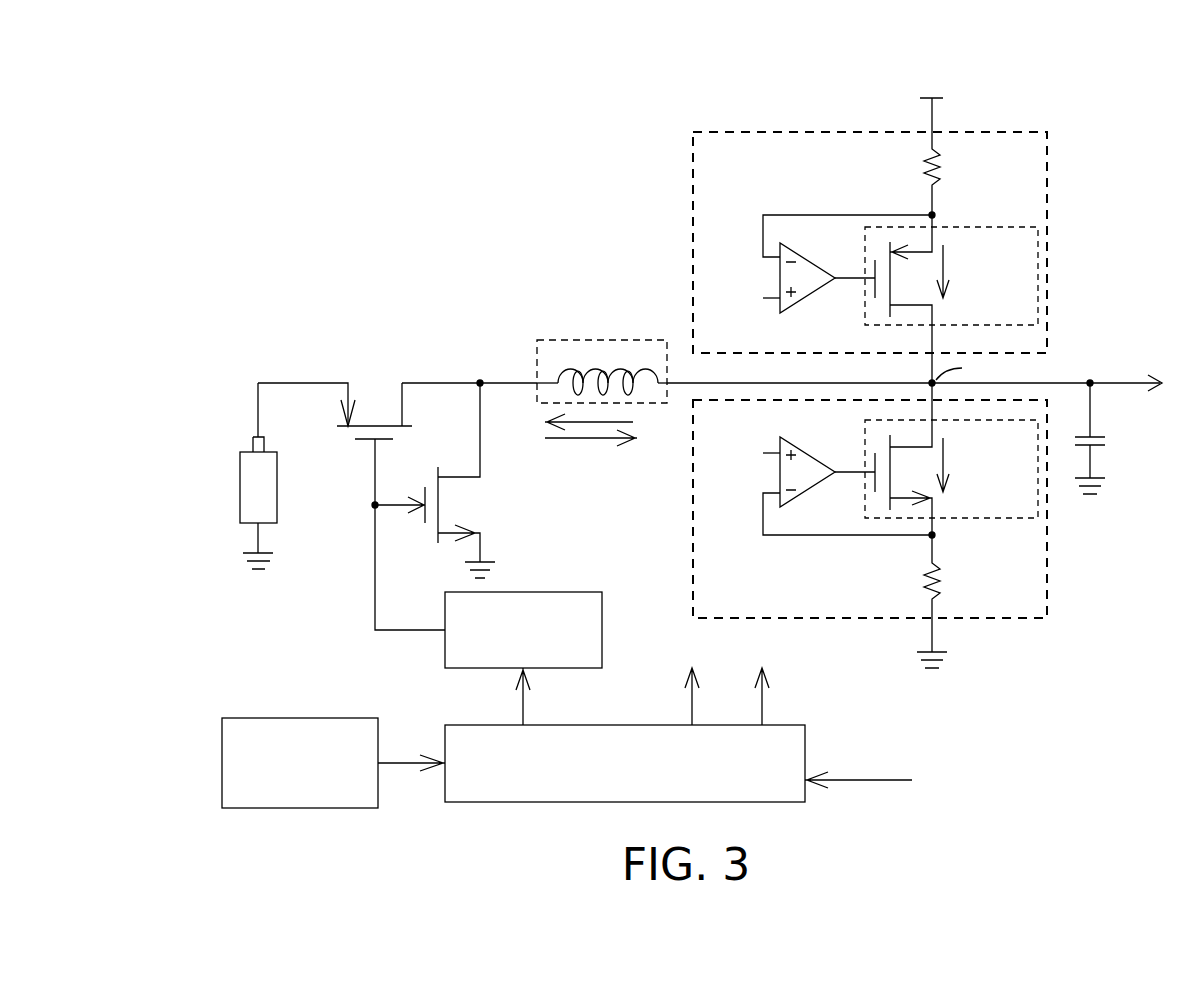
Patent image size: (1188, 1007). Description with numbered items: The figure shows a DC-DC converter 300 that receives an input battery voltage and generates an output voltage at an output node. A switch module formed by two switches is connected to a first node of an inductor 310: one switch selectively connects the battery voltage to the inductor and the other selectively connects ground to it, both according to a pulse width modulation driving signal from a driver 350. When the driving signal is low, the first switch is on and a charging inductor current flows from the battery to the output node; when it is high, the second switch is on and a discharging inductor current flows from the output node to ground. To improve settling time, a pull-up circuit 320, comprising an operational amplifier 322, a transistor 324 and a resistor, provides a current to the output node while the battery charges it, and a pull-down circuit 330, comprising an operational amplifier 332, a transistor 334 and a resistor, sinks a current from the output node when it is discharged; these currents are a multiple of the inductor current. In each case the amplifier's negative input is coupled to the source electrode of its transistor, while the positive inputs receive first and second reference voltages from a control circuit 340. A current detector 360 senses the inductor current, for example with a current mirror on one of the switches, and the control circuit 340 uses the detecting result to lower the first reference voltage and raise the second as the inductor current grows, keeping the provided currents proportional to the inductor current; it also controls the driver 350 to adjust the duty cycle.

The DC-DC converter 300 is at (348, 126).
The inductor 310 is at (603, 340).
The pull-up circuit 320 is at (1047, 243).
The operational amplifier 322 is at (808, 300).
The transistor 324 is at (1038, 275).
The pull-down circuit 330 is at (1047, 573).
The operational amplifier 332 is at (808, 452).
The transistor 334 is at (990, 518).
The control circuit 340 is at (805, 743).
The driver 350 is at (568, 592).
The current detector 360 is at (300, 718).